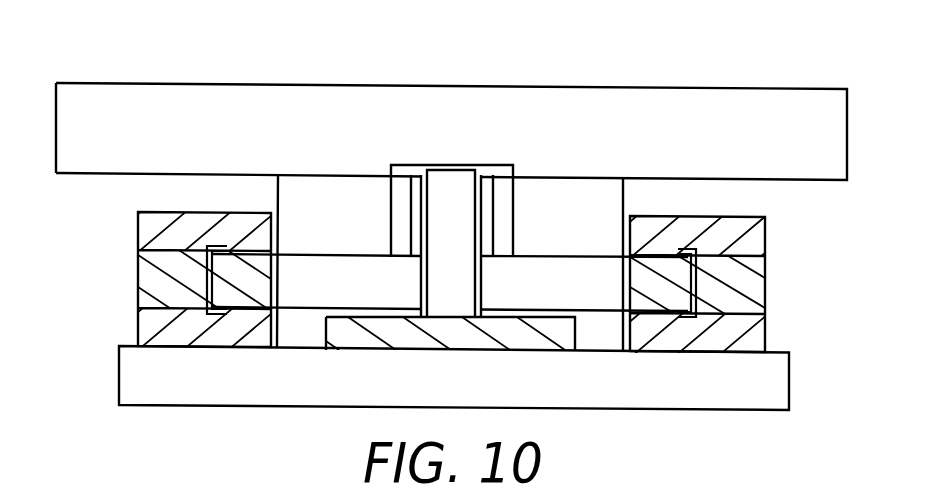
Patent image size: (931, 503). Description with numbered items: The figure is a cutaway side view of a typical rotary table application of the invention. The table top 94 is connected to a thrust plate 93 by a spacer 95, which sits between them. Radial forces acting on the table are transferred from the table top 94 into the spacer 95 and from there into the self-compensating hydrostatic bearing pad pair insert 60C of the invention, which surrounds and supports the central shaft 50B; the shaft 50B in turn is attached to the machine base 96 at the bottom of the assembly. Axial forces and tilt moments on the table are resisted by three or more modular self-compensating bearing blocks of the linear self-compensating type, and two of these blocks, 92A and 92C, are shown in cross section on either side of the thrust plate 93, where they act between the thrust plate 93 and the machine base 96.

The table top 94 is at (170, 104).
The spacer 95 is at (575, 190).
The shaft 50B is at (446, 188).
The self-compensating hydrostatic bearing pad pair insert 60C is at (503, 190).
The modular self-compensating bearing block 92A is at (130, 234).
The modular self-compensating bearing block 92C is at (776, 281).
The thrust plate 93 is at (240, 280).
The machine base 96 is at (767, 382).